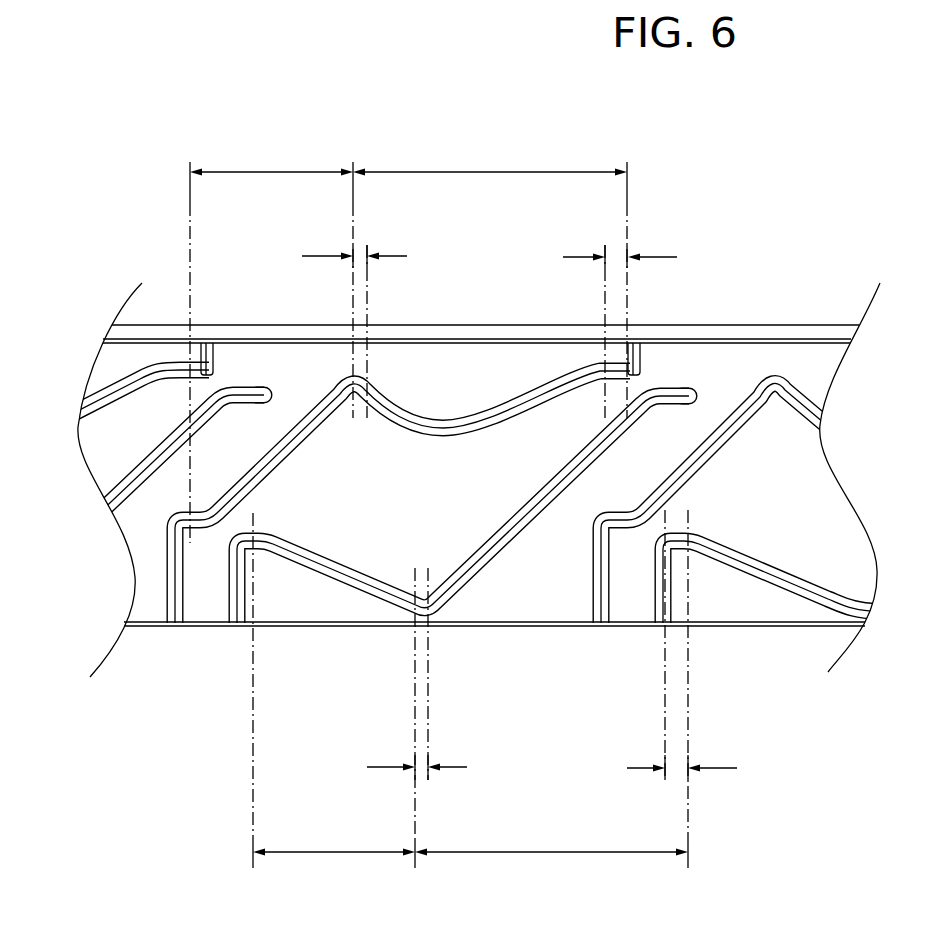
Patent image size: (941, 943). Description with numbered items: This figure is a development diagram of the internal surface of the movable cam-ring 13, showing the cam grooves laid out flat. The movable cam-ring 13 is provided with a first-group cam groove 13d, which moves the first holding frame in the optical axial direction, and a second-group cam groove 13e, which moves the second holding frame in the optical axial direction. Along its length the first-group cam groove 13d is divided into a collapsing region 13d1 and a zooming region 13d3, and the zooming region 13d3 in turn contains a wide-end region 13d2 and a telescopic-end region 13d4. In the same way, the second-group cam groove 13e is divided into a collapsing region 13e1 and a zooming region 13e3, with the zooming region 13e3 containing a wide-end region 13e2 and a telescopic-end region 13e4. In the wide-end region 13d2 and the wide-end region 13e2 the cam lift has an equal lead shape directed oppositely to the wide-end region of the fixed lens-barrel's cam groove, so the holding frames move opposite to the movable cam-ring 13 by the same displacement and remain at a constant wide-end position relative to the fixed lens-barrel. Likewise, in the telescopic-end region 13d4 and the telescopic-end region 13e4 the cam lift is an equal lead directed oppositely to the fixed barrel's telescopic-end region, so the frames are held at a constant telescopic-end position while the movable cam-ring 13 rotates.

The movable cam-ring 13 is at (837, 512).
The first-group cam groove 13d is at (436, 418).
The second-group cam groove 13e is at (518, 533).
The collapsing region 13d1 is at (237, 88).
The wide-end region 13d2 is at (275, 245).
The zooming region 13d3 is at (444, 128).
The telescopic-end region 13d4 is at (693, 213).
The collapsing region 13e1 is at (180, 842).
The wide-end region 13e2 is at (468, 739).
The zooming region 13e3 is at (525, 842).
The telescopic-end region 13e4 is at (790, 740).